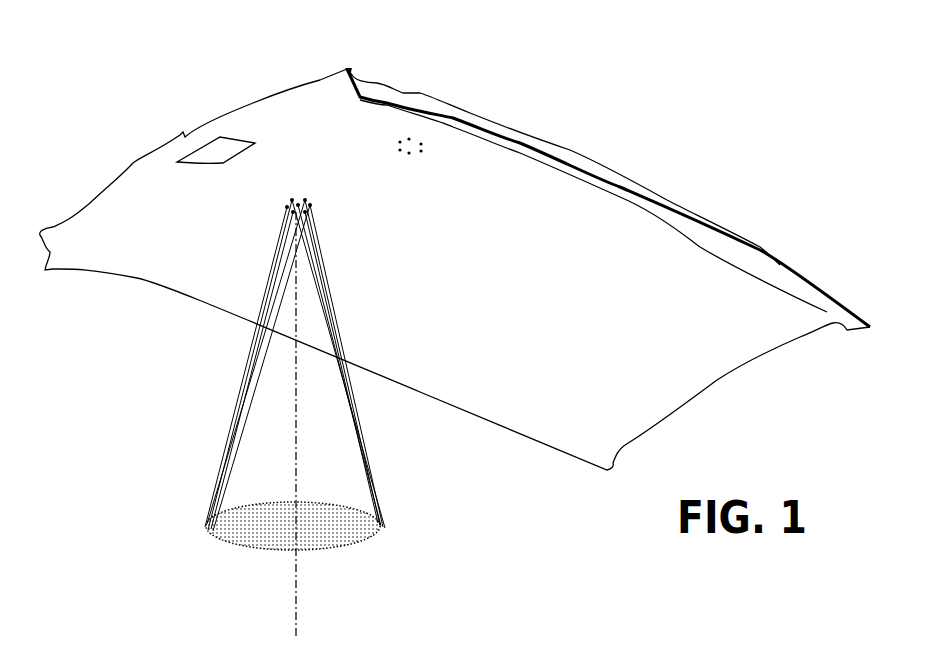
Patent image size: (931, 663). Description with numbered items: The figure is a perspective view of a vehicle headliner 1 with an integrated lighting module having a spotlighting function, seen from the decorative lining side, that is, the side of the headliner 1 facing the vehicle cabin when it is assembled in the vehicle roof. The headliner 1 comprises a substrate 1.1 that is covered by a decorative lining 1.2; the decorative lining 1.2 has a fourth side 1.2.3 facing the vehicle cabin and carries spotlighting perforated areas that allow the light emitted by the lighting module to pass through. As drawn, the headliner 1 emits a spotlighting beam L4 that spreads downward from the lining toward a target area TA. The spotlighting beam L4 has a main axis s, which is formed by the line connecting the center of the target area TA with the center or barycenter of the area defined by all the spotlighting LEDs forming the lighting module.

The headliner 1 is at (177, 100).
The substrate 1.1 is at (573, 160).
The decorative lining 1.2 is at (135, 253).
The fourth side 1.2.3 is at (540, 283).
The spotlighting beam L4 is at (295, 364).
The target area TA is at (307, 530).
The main axis s is at (282, 426).